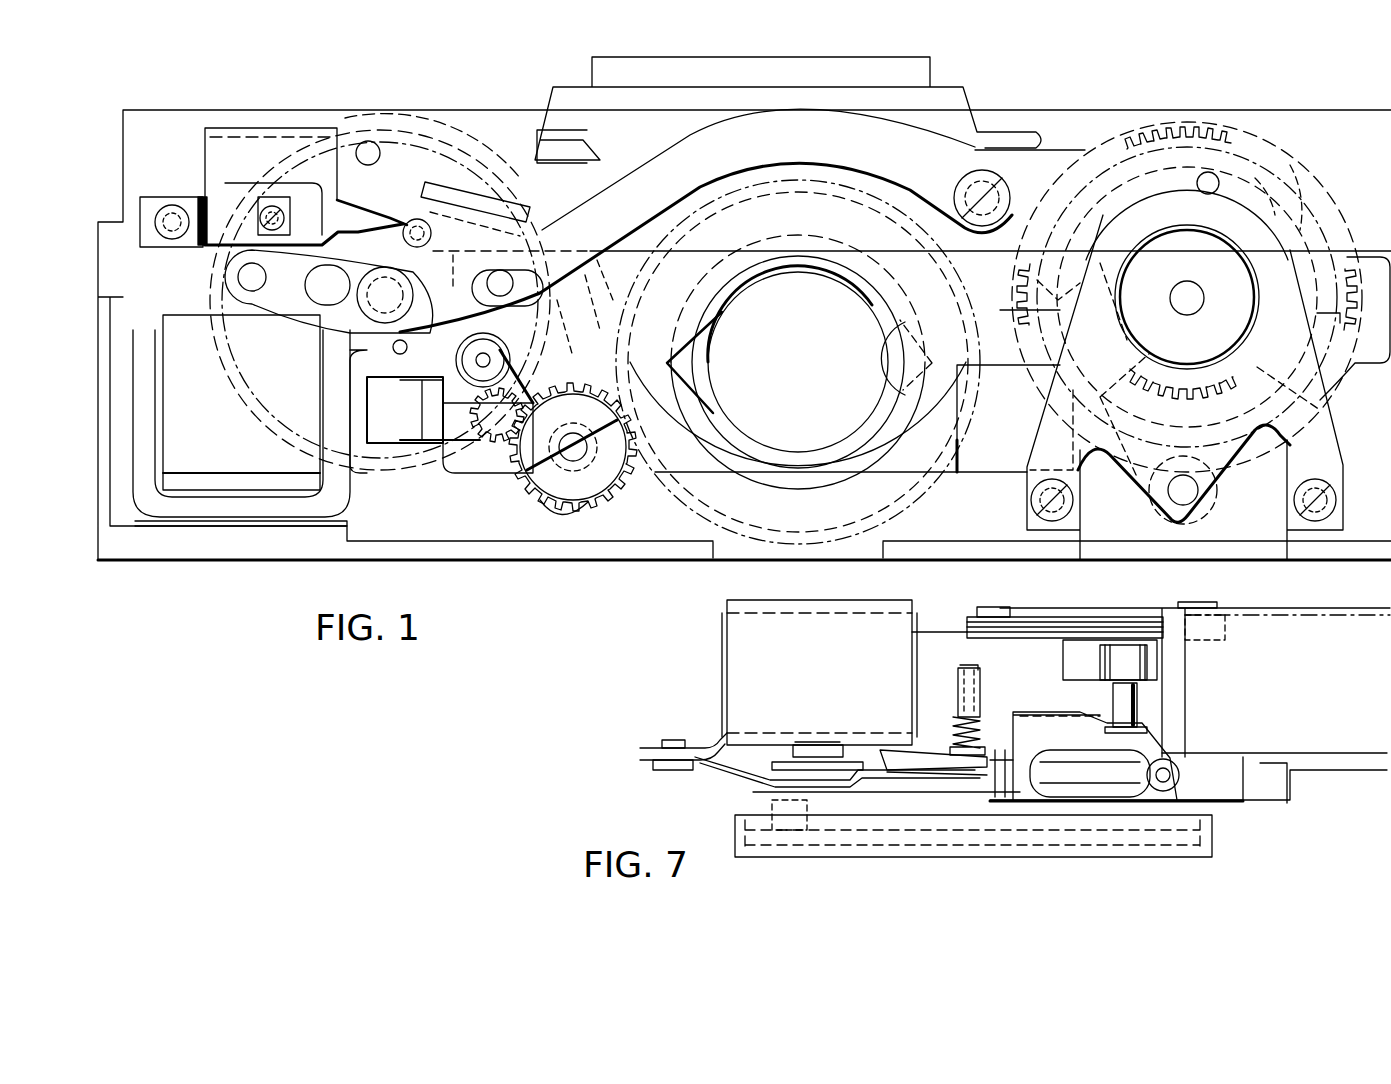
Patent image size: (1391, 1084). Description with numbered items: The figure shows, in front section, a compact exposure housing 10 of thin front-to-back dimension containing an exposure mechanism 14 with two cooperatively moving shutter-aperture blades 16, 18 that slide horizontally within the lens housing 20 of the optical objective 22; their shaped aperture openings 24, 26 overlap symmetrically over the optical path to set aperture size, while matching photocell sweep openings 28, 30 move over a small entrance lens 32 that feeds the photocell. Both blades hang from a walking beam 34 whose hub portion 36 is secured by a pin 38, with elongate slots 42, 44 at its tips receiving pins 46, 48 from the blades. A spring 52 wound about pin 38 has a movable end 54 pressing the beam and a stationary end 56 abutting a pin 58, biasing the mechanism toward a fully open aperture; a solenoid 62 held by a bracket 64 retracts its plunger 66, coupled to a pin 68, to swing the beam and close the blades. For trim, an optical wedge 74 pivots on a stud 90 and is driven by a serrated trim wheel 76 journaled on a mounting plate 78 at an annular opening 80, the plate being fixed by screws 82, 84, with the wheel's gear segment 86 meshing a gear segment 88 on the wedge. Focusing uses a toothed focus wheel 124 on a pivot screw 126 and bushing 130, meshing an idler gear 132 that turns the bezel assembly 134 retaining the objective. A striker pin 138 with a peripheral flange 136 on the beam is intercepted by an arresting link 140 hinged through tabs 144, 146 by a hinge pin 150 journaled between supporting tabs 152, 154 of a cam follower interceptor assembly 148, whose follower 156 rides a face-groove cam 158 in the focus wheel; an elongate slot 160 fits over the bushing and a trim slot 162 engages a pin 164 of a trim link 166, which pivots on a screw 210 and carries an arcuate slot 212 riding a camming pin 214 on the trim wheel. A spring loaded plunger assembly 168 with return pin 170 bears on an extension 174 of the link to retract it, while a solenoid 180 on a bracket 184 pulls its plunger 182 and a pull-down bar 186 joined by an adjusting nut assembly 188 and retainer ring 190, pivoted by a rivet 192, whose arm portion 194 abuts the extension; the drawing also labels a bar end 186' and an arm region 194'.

In FIG. 1, the exposure housing 10 is at (1085, 98).
In FIG. 1, the exposure mechanism 14 is at (692, 246).
In FIG. 7, the exposure mechanism 14 is at (1247, 647).
In FIG. 1, the shutter-aperture blade 16 is at (665, 470).
In FIG. 7, the shutter-aperture blade 16 is at (1263, 617).
In FIG. 7, the shutter-aperture blade 18 is at (1273, 605).
In FIG. 1, the lens housing 20 is at (905, 490).
In FIG. 1, the optical objective 22 is at (797, 362).
In FIG. 1, the aperture opening 24 is at (900, 325).
In FIG. 1, the aperture opening 26 is at (697, 349).
In FIG. 1, the photocell sweep opening 28 is at (1110, 318).
In FIG. 1, the photocell sweep opening 30 is at (1193, 290).
In FIG. 1, the entrance lens 32 is at (1250, 247).
In FIG. 1, the walking beam 34 is at (540, 503).
In FIG. 7, the walking beam 34 is at (1077, 625).
In FIG. 1, the hub portion 36 is at (510, 313).
In FIG. 1, the pin 38 is at (510, 330).
In FIG. 1, the elongate slot 42 is at (563, 508).
In FIG. 1, the elongate slot 44 is at (437, 257).
In FIG. 1, the pin 46 is at (553, 505).
In FIG. 1, the pin 48 is at (463, 192).
In FIG. 1, the spring 52 is at (547, 372).
In FIG. 1, the movable end 54 is at (443, 400).
In FIG. 1, the stationary end 56 is at (473, 373).
In FIG. 1, the pin 58 is at (390, 368).
In FIG. 1, the solenoid 62 is at (214, 420).
In FIG. 1, the bracket 64 is at (215, 512).
In FIG. 1, the plunger 66 is at (392, 435).
In FIG. 1, the pin 68 is at (460, 430).
In FIG. 1, the optical wedge 74 is at (1325, 315).
In FIG. 1, the trim wheel 76 is at (1200, 133).
In FIG. 1, the mounting plate 78 is at (1325, 432).
In FIG. 1, the annular opening 80 is at (1130, 363).
In FIG. 1, the screw 82 is at (1323, 482).
In FIG. 1, the screw 84 is at (1042, 492).
In FIG. 1, the gear segment 86 is at (1250, 379).
In FIG. 1, the gear segment 88 is at (1248, 401).
In FIG. 1, the stud 90 is at (1190, 490).
In FIG. 1, the focus wheel 124 is at (447, 130).
In FIG. 7, the pivot screw 126 is at (1025, 845).
In FIG. 1, the focus wheel bushing 130 is at (370, 310).
In FIG. 7, the focus wheel bushing 130 is at (960, 830).
In FIG. 1, the idler gear 132 is at (600, 500).
In FIG. 1, the bezel assembly 134 is at (878, 517).
In FIG. 7, the peripheral flange 136 is at (1143, 730).
In FIG. 1, the follow-focus striker pin 138 is at (520, 188).
In FIG. 7, the follow-focus striker pin 138 is at (1157, 668).
In FIG. 7, the interceptor arresting link 140 is at (1143, 745).
In FIG. 1, the tab 144 is at (565, 222).
In FIG. 7, the tab 144 is at (1180, 767).
In FIG. 1, the tab 146 is at (425, 192).
In FIG. 7, the tab 146 is at (1050, 768).
In FIG. 1, the cam follower interceptor assembly 148 is at (273, 305).
In FIG. 7, the cam follower interceptor assembly 148 is at (1200, 818).
In FIG. 1, the hinge pin 150 is at (400, 207).
In FIG. 7, the hinge pin 150 is at (1185, 773).
In FIG. 1, the supporting tab 152 is at (545, 233).
In FIG. 7, the supporting tab 152 is at (1175, 790).
In FIG. 1, the supporting tab 154 is at (393, 200).
In FIG. 7, the supporting tab 154 is at (983, 800).
In FIG. 1, the follower 156 is at (240, 271).
In FIG. 1, the face-groove cam 158 is at (357, 117).
In FIG. 7, the face-groove cam 158 is at (832, 830).
In FIG. 1, the elongate slot 160 is at (323, 305).
In FIG. 1, the trim slot 162 is at (565, 303).
In FIG. 1, the pin 164 is at (550, 240).
In FIG. 1, the trim link 166 is at (903, 130).
In FIG. 1, the spring loaded plunger assembly 168 is at (338, 150).
In FIG. 7, the spring loaded plunger assembly 168 is at (965, 713).
In FIG. 7, the interceptor return pin 170 is at (965, 667).
In FIG. 1, the extension 174 is at (320, 313).
In FIG. 7, the extension 174 is at (903, 750).
In FIG. 1, the solenoid 180 is at (272, 150).
In FIG. 7, the solenoid 180 is at (747, 651).
In FIG. 7, the plunger 182 is at (827, 745).
In FIG. 1, the bracket 184 is at (230, 128).
In FIG. 7, the bracket 184 is at (740, 605).
In FIG. 1, the pull-down bar 186 is at (271, 152).
In FIG. 7, the pull-down bar 186 is at (828, 785).
In FIG. 7, the spring plate end 186' is at (720, 806).
In FIG. 1, the adjusting nut assembly 188 is at (265, 195).
In FIG. 7, the adjusting nut assembly 188 is at (825, 770).
In FIG. 1, the retainer ring 190 is at (210, 260).
In FIG. 7, the retainer ring 190 is at (778, 762).
In FIG. 1, the rivet 192 is at (172, 195).
In FIG. 7, the rivet 192 is at (680, 740).
In FIG. 1, the arm portion 194 is at (286, 198).
In FIG. 7, the arm portion 194 is at (937, 752).
In FIG. 7, the screw 194' is at (914, 818).
In FIG. 1, the screw 210 is at (1000, 200).
In FIG. 1, the arcuately-shaped slot 212 is at (1273, 167).
In FIG. 1, the camming pin 214 is at (1210, 177).